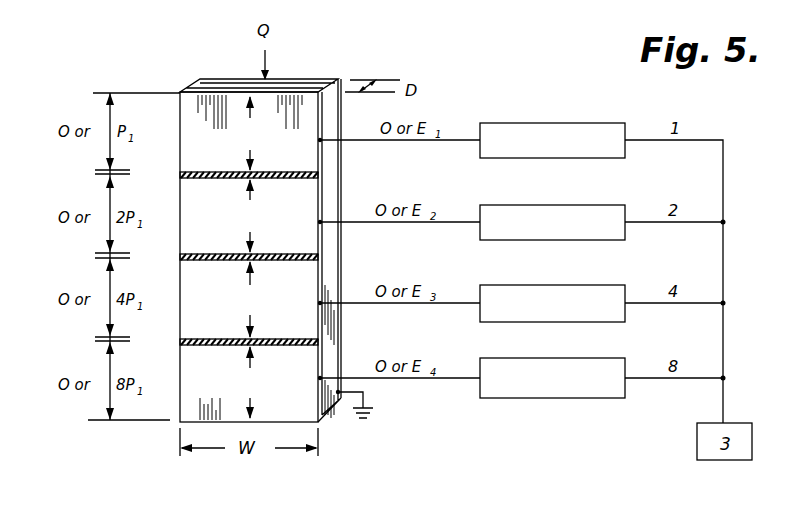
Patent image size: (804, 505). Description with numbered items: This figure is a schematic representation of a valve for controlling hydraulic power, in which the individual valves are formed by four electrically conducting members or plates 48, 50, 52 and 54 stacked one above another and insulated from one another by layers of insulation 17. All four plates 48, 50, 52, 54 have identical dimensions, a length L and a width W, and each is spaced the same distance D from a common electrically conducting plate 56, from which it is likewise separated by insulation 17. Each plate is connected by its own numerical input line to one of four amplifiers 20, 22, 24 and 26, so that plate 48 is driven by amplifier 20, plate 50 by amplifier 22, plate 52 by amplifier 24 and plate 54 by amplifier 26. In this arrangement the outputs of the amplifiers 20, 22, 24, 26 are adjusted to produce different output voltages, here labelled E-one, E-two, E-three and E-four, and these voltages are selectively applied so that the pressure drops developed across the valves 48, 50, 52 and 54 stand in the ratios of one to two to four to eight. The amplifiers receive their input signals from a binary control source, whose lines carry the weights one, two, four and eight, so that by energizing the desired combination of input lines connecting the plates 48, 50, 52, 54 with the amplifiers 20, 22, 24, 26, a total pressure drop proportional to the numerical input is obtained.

The insulation 17 is at (190, 88).
The electrically conducting plate 56 is at (308, 79).
The electrically conducting plate 48 is at (298, 164).
The electrically conducting plate 50 is at (298, 248).
The electrically conducting plate 52 is at (298, 330).
The electrically conducting plate 54 is at (298, 412).
The amplifier 20 is at (568, 123).
The amplifier 22 is at (568, 205).
The amplifier 24 is at (568, 285).
The amplifier 26 is at (568, 358).